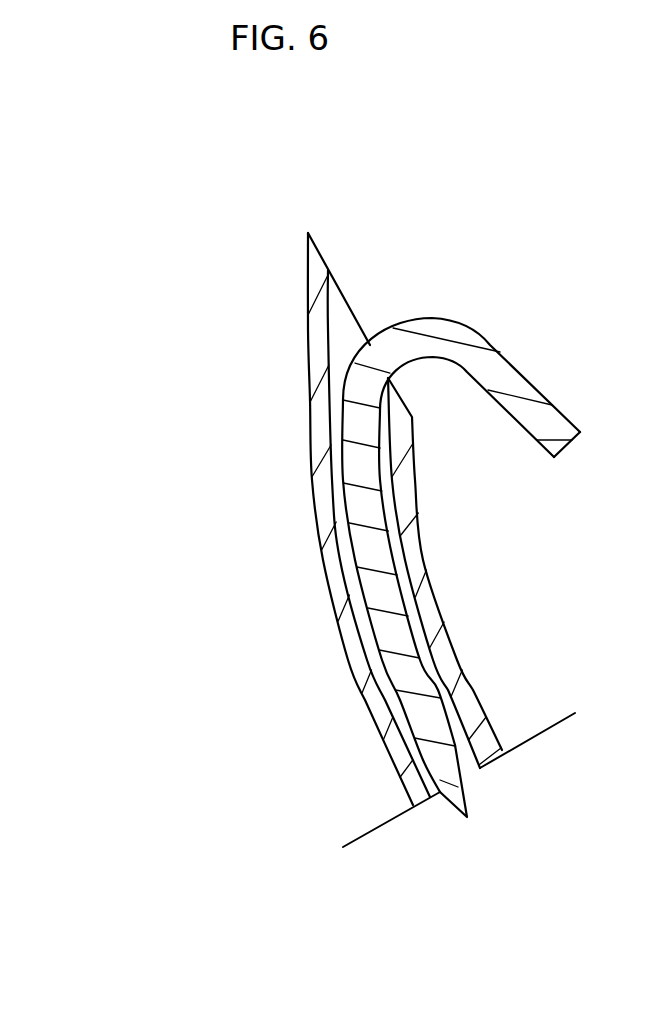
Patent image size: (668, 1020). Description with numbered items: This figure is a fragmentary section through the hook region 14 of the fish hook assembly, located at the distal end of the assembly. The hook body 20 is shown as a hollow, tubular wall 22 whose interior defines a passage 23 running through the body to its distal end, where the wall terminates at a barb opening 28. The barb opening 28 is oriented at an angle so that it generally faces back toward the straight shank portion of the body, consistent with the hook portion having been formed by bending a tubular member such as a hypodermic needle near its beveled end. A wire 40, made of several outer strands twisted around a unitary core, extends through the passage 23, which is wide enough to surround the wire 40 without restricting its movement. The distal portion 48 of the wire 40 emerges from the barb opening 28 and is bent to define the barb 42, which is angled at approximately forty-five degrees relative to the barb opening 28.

The hook region 14 is at (575, 271).
The hook body 20 is at (338, 633).
The tubular wall 22 is at (317, 513).
The passage 23 is at (341, 366).
The barb opening 28 is at (354, 300).
The wire 40 is at (463, 710).
The barb 42 is at (580, 444).
The distal portion 48 is at (509, 420).